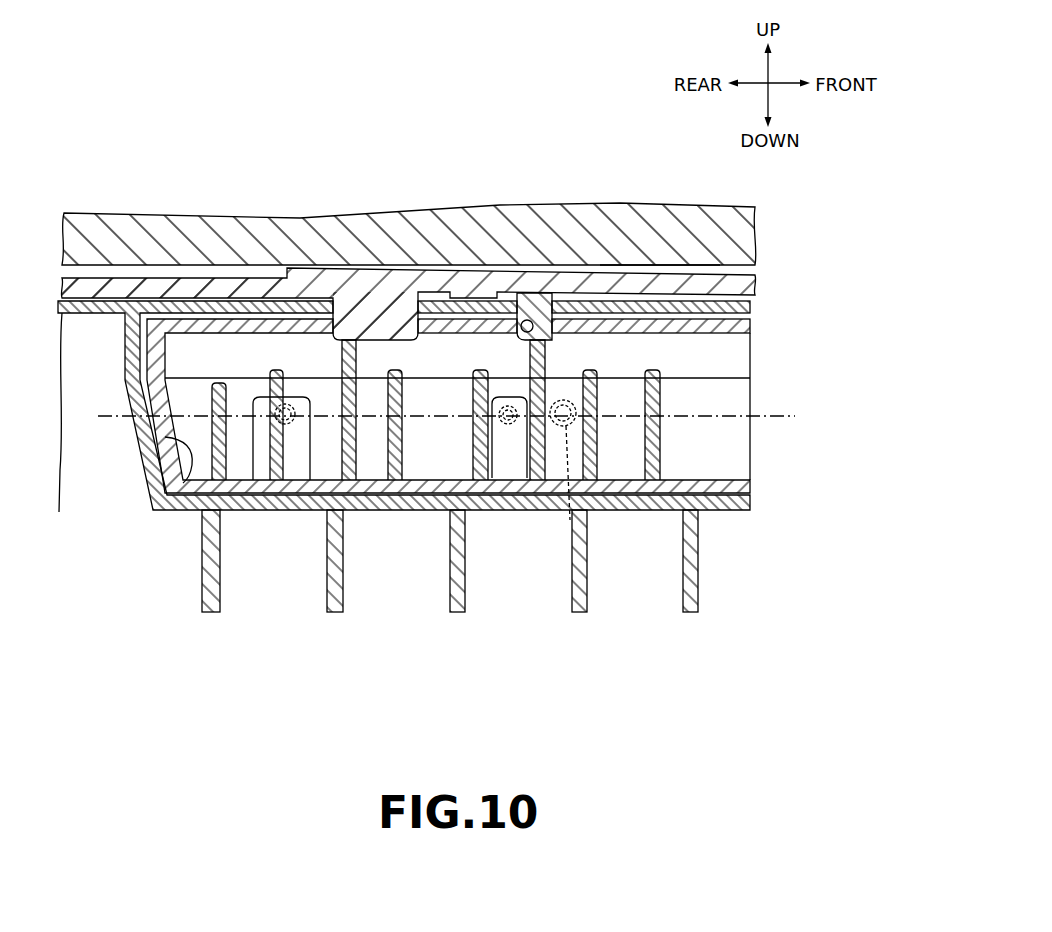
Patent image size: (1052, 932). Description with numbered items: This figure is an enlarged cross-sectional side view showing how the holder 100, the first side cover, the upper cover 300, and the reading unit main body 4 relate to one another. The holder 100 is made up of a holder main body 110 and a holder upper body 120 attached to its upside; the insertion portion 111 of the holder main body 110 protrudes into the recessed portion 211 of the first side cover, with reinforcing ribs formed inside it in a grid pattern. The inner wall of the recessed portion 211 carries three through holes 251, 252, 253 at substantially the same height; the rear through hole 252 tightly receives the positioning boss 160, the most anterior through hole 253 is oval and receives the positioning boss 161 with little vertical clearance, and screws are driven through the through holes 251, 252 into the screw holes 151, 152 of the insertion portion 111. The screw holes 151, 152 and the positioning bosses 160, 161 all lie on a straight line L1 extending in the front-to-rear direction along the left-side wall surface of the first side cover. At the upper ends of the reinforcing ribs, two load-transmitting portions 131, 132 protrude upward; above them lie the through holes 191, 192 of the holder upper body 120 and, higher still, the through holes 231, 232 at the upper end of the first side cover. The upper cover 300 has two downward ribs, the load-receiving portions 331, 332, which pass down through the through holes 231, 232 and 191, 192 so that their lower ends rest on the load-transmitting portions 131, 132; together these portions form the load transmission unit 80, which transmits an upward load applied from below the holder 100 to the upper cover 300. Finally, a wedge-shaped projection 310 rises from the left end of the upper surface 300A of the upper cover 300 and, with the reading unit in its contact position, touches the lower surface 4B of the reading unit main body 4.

The reading unit main body 4 is at (600, 225).
The lower surface of the reading unit main body 4B is at (652, 270).
The load transmission unit 80 is at (288, 300).
The holder 100 is at (471, 456).
The holder main body 110 is at (758, 442).
The insertion portion 111 is at (684, 404).
The holder upper body 120 is at (843, 450).
The load-transmitting portion 131 is at (547, 342).
The load-transmitting portion 132 is at (356, 360).
The screw hole 151 is at (516, 424).
The screw hole 152 is at (285, 424).
The positioning boss 160 is at (297, 424).
The positioning boss 161 is at (582, 510).
The through hole 191 is at (515, 345).
The through hole 192 is at (407, 340).
The recessed portion 211 is at (184, 480).
The through hole 231 is at (557, 340).
The through hole 232 is at (348, 300).
The through hole 251 is at (502, 424).
The through hole 252 is at (285, 405).
The through hole 253 is at (552, 426).
The upper cover 300 is at (759, 287).
The upper surface of the upper cover 300A is at (233, 276).
The projection 310 is at (400, 322).
The load-receiving portion 331 is at (530, 325).
The load-receiving portion 332 is at (385, 272).
The straight line L1 is at (431, 415).